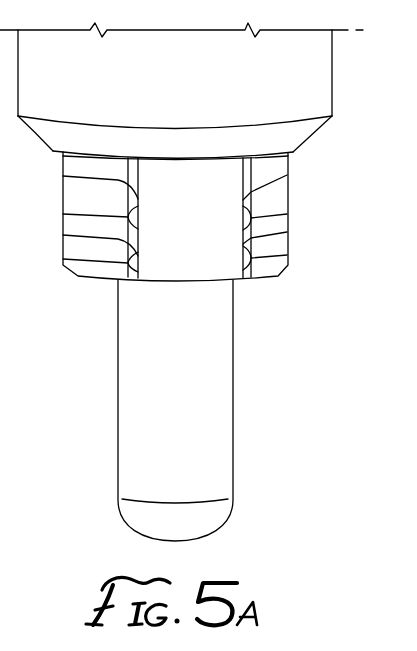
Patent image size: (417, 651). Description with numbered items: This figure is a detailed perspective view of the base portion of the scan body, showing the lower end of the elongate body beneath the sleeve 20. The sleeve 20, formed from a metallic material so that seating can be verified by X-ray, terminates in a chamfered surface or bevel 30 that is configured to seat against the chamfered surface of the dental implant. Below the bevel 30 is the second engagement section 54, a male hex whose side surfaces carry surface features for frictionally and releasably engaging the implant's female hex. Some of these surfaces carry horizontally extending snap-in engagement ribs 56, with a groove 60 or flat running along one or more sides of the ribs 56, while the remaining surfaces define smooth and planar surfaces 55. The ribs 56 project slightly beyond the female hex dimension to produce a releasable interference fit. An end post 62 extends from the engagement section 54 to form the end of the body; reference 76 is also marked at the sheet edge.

The sleeve 20 is at (303, 72).
The bevel 30 is at (297, 136).
The second engagement section 54 is at (330, 184).
The smooth and planar surface 55 is at (183, 261).
The engagement rib 56 is at (94, 213).
The groove 60 is at (267, 195).
The end post 62 is at (198, 387).
The element 76 is at (409, 442).